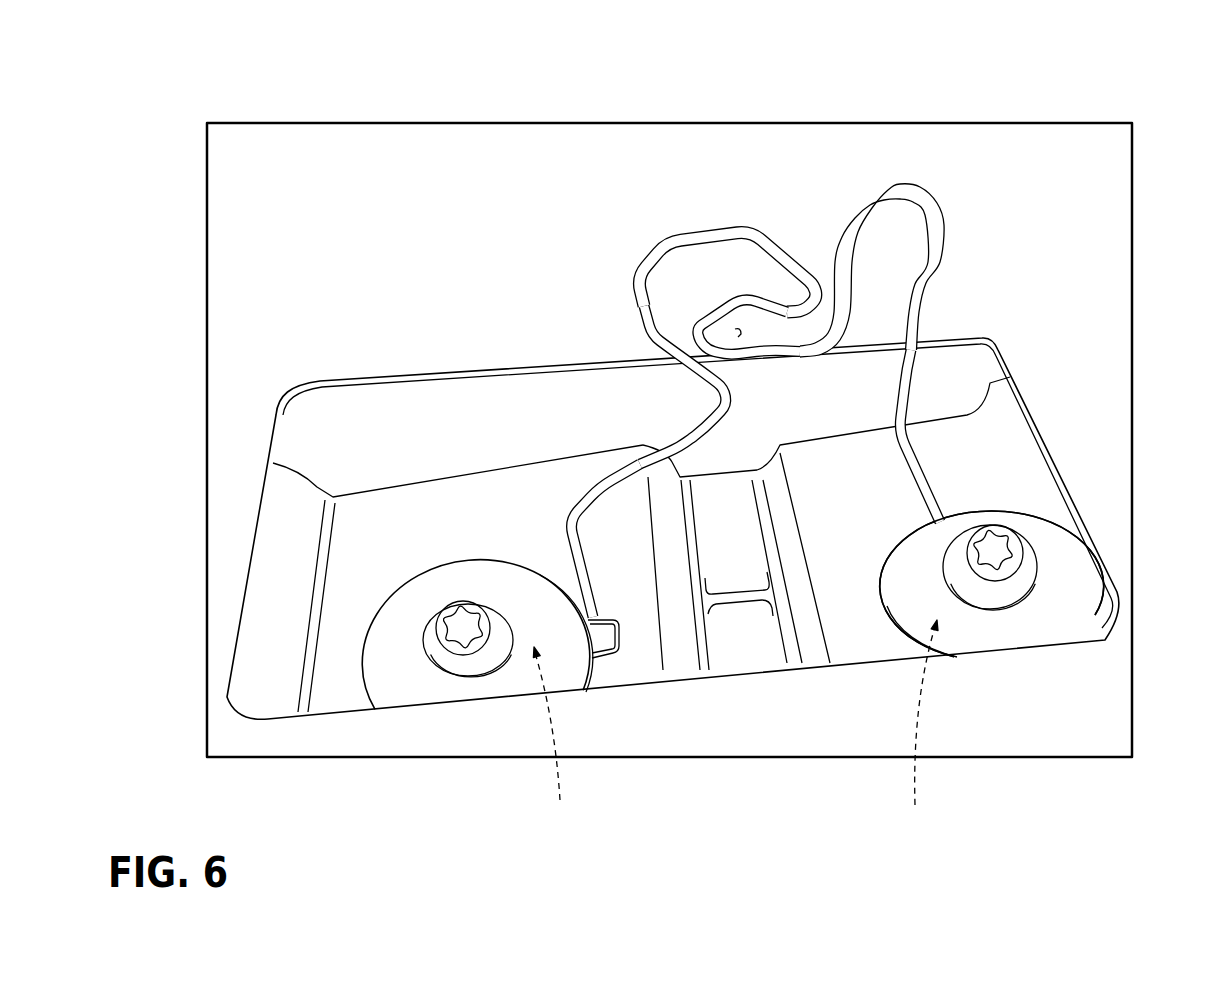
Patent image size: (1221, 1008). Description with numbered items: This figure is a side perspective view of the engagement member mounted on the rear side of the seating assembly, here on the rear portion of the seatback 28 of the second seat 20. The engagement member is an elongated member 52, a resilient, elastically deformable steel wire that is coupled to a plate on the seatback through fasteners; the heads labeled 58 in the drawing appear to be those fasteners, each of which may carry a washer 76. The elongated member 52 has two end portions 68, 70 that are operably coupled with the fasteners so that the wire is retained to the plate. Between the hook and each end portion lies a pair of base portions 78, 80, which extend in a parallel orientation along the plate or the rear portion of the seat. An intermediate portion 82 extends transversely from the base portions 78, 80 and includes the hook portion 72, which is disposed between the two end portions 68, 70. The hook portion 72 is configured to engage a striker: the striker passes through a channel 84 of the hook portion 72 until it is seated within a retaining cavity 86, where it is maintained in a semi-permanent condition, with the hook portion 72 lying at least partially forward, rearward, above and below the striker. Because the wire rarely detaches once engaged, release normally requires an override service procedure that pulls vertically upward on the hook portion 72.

The second seat 20 is at (703, 441).
The seatback 28 is at (1070, 255).
The elongated member 52 is at (879, 437).
The fastener screw 58 is at (468, 650).
The end portion 68 is at (553, 740).
The end portion 70 is at (928, 727).
The hook portion 72 is at (776, 290).
The washer 76 is at (397, 677).
The base portion 78 is at (577, 562).
The base portion 80 is at (917, 483).
The intermediate portion 82 is at (688, 220).
The channel 84 is at (825, 263).
The retaining cavity 86 is at (741, 332).